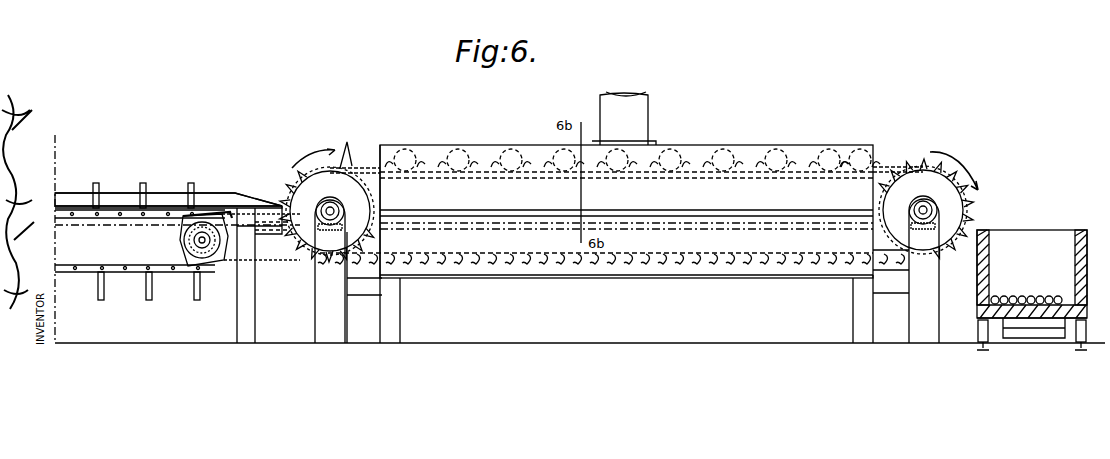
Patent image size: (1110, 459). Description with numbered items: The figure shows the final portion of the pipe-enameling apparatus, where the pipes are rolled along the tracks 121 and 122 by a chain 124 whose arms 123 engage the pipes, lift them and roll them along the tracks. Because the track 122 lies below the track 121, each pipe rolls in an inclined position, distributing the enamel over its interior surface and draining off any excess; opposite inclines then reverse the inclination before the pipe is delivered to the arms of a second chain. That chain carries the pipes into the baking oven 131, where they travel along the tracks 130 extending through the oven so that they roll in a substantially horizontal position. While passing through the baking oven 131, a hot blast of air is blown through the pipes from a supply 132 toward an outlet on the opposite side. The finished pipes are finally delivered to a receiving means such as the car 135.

The track 121 is at (253, 200).
The track 122 is at (183, 184).
The arms 123 is at (143, 187).
The chain 124 is at (138, 262).
The tracks 130 is at (366, 168).
The baking oven 131 is at (700, 155).
The supply 132 is at (520, 150).
The car 135 is at (1030, 248).